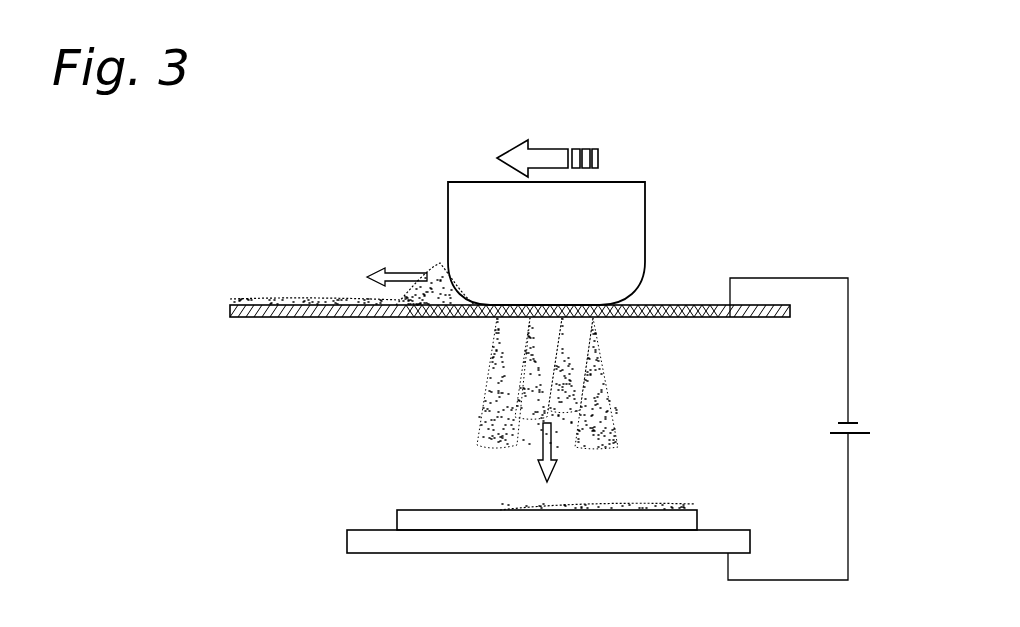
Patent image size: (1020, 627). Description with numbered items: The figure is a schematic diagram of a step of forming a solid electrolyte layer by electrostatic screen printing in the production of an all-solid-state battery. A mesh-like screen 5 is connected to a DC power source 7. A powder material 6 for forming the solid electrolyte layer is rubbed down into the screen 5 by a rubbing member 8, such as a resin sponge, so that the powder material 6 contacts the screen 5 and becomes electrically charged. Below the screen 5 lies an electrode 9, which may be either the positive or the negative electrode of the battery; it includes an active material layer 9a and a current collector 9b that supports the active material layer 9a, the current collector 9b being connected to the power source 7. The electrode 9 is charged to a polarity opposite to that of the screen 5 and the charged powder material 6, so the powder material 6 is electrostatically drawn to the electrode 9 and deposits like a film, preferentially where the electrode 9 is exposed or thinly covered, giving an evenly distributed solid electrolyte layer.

The screen 5 is at (704, 318).
The powder material 6 is at (440, 265).
The power source 7 is at (856, 423).
The rubbing member 8 is at (656, 259).
The electrode 9 is at (584, 515).
The active material layer 9a is at (685, 523).
The current collector 9b is at (570, 537).